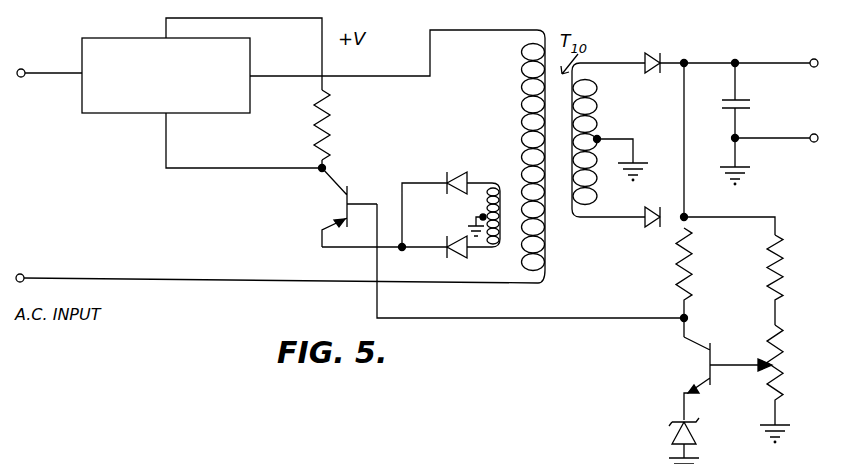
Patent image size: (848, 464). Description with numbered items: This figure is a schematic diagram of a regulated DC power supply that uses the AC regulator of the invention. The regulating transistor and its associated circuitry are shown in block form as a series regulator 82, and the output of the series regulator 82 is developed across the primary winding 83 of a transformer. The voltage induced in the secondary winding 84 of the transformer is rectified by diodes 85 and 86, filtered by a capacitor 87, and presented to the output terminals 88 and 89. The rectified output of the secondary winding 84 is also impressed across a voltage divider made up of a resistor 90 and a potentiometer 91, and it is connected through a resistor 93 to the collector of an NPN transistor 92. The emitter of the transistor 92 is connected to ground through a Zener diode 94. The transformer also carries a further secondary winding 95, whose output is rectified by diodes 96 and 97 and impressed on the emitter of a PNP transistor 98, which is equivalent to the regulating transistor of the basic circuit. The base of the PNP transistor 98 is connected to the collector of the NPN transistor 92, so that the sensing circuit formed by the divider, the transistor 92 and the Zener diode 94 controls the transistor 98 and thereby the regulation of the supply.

The series regulator 82 is at (143, 114).
The primary winding 83 is at (521, 92).
The secondary winding 84 is at (598, 98).
The diode 85 is at (656, 58).
The diode 86 is at (665, 190).
The capacitor 87 is at (740, 99).
The output terminal 88 is at (815, 68).
The output terminal 89 is at (811, 143).
The resistor 90 is at (781, 266).
The potentiometer 91 is at (783, 352).
The NPN transistor 92 is at (713, 352).
The resistor 93 is at (688, 266).
The Zener diode 94 is at (700, 442).
The further secondary winding 95 is at (503, 190).
The diode 96 is at (461, 178).
The diode 97 is at (462, 258).
The PNP transistor 98 is at (352, 193).